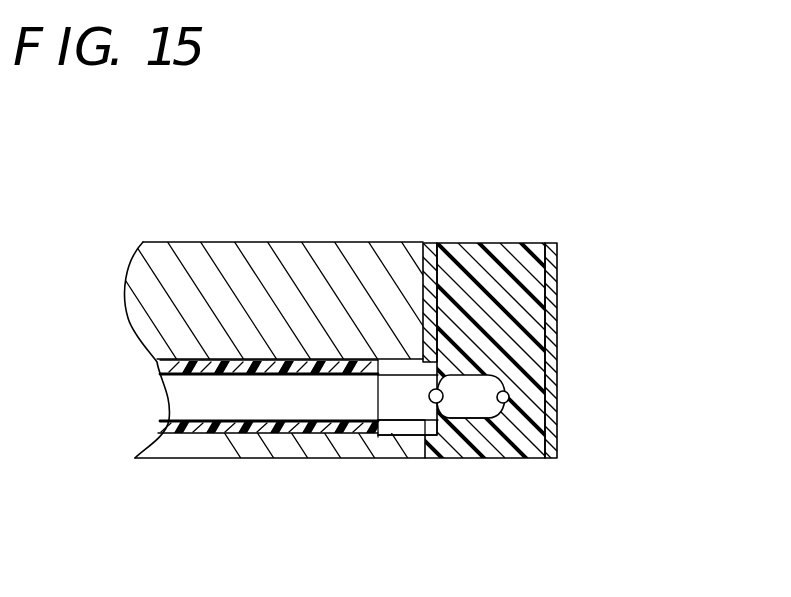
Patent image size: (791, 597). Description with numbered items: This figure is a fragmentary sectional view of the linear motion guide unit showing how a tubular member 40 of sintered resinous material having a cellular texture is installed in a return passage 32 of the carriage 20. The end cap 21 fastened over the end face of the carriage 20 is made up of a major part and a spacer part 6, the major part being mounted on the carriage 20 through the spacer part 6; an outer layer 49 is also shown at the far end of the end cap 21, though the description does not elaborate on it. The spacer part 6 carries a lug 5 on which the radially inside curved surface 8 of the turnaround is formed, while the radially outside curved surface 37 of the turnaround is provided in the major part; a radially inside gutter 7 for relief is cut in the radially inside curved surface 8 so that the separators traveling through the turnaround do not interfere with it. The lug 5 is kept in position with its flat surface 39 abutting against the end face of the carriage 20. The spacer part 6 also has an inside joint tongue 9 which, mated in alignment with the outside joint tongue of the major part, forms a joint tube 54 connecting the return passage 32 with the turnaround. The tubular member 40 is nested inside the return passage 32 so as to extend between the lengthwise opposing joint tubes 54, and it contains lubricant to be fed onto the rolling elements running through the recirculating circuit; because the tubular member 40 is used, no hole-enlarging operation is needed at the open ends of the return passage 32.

The carriage 20 is at (267, 285).
The inside joint tongue 9 is at (387, 362).
The spacer part 6 is at (432, 280).
The end cap 21 is at (498, 297).
The outer layer 49 is at (548, 327).
The return passage 32 is at (222, 375).
The tubular member 40 is at (292, 367).
The joint tube 54 is at (398, 428).
The radially inside gutter 7 is at (433, 408).
The lug 5 is at (439, 413).
The radially inside curved surface 8 is at (475, 403).
The radially outside curved surface 37 is at (497, 385).
The flat surface 39 is at (485, 418).